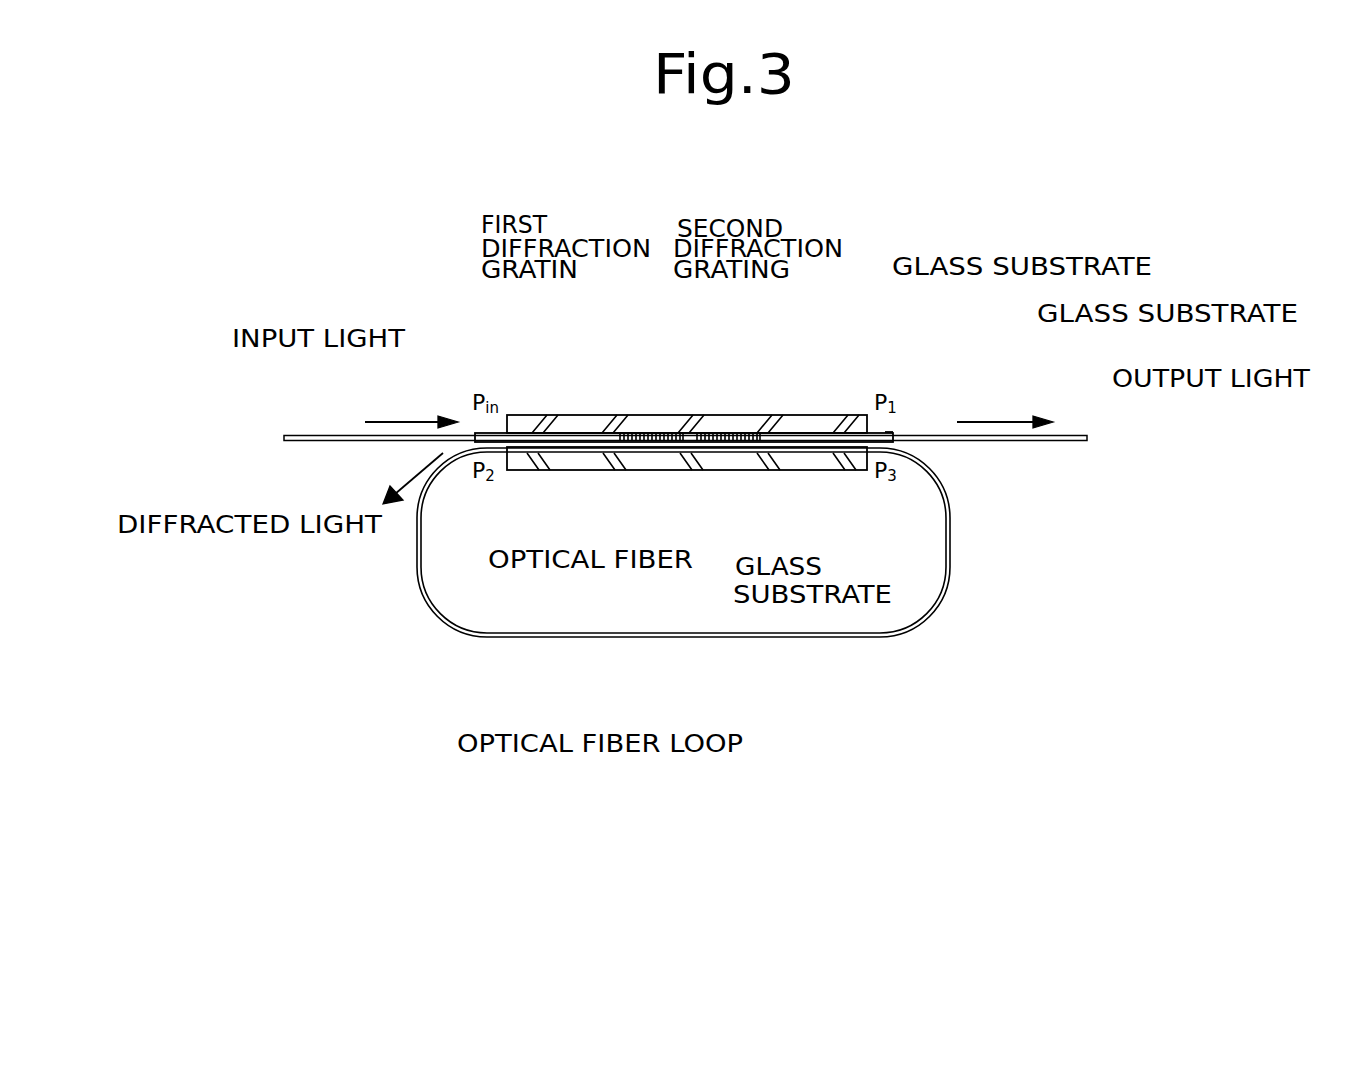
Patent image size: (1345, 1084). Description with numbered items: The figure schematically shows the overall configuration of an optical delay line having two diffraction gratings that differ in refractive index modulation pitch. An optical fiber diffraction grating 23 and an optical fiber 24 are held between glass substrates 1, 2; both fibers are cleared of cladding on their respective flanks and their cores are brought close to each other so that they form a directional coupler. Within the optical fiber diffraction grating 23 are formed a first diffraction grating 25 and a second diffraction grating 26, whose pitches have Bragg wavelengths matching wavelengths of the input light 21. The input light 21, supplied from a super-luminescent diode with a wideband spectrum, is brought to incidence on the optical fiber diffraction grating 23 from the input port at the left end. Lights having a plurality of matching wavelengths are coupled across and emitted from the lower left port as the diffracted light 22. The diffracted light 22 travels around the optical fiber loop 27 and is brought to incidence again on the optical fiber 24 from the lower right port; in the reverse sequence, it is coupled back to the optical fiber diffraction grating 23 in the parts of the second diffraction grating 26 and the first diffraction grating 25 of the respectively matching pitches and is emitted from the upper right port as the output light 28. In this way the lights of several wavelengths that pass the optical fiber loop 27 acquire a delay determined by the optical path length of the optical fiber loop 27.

The glass substrate 1 is at (801, 425).
The glass substrate 2 is at (803, 463).
The input light 21 is at (377, 422).
The diffracted light 22 is at (420, 465).
The optical fiber diffraction grating 23 is at (885, 432).
The optical fiber 24 is at (592, 453).
The first diffraction grating 25 is at (648, 432).
The second diffraction grating 26 is at (705, 432).
The optical fiber loop 27 is at (587, 637).
The output light 28 is at (1010, 418).